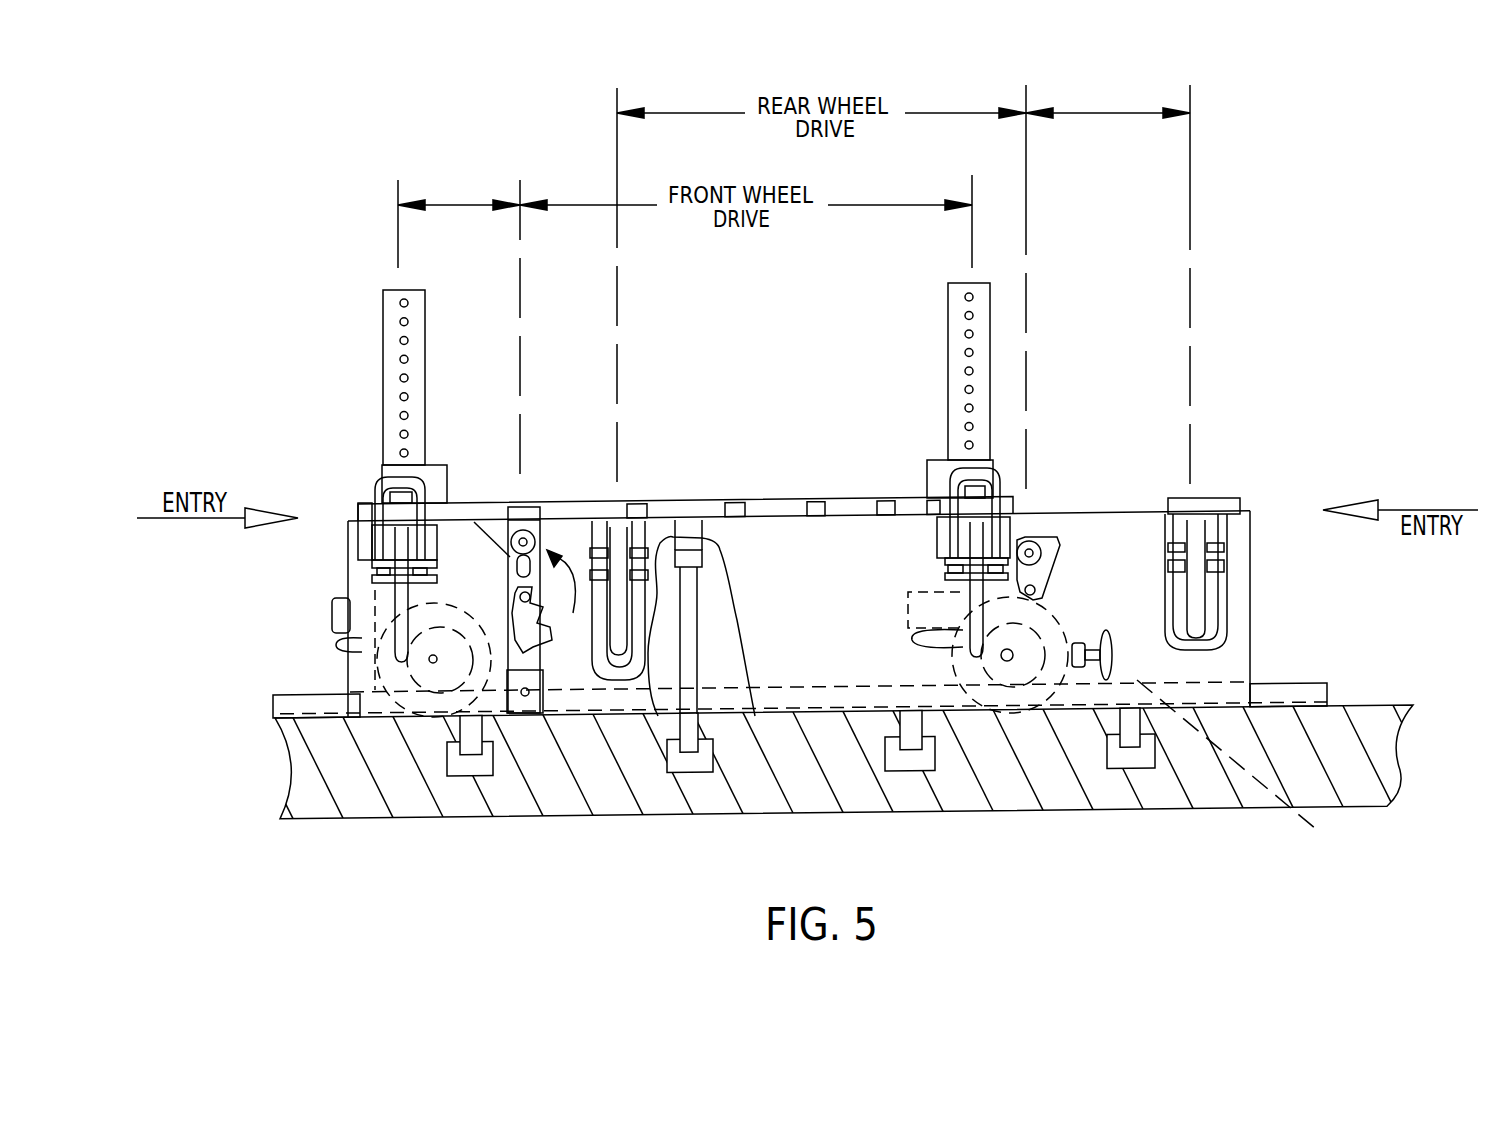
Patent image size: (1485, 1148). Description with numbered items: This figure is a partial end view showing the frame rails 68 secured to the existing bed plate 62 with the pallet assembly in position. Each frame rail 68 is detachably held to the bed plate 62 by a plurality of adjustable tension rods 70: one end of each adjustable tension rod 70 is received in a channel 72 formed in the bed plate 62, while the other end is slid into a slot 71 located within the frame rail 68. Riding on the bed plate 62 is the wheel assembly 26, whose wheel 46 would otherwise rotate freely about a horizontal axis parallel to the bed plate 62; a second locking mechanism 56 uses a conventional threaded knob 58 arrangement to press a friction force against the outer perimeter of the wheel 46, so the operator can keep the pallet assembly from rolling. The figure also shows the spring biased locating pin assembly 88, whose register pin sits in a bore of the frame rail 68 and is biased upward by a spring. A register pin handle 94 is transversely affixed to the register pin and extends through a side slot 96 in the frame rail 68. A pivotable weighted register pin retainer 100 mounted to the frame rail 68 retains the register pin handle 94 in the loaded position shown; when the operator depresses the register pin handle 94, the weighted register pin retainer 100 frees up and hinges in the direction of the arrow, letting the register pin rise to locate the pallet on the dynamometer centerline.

The wheel assembly 26 is at (816, 578).
The wheel 46 is at (1106, 627).
The second locking mechanism 56 is at (1265, 778).
The threaded knob 58 is at (1085, 660).
The bed plate 62 is at (821, 773).
The frame rail 68 is at (785, 581).
The adjustable tension rod 70 is at (756, 659).
The slot 71 is at (725, 553).
The channel 72 is at (801, 807).
The spring biased locating pin assembly 88 is at (594, 564).
The register pin handle 94 is at (560, 480).
The side slot 96 is at (502, 481).
The weighted register pin retainer 100 is at (817, 532).